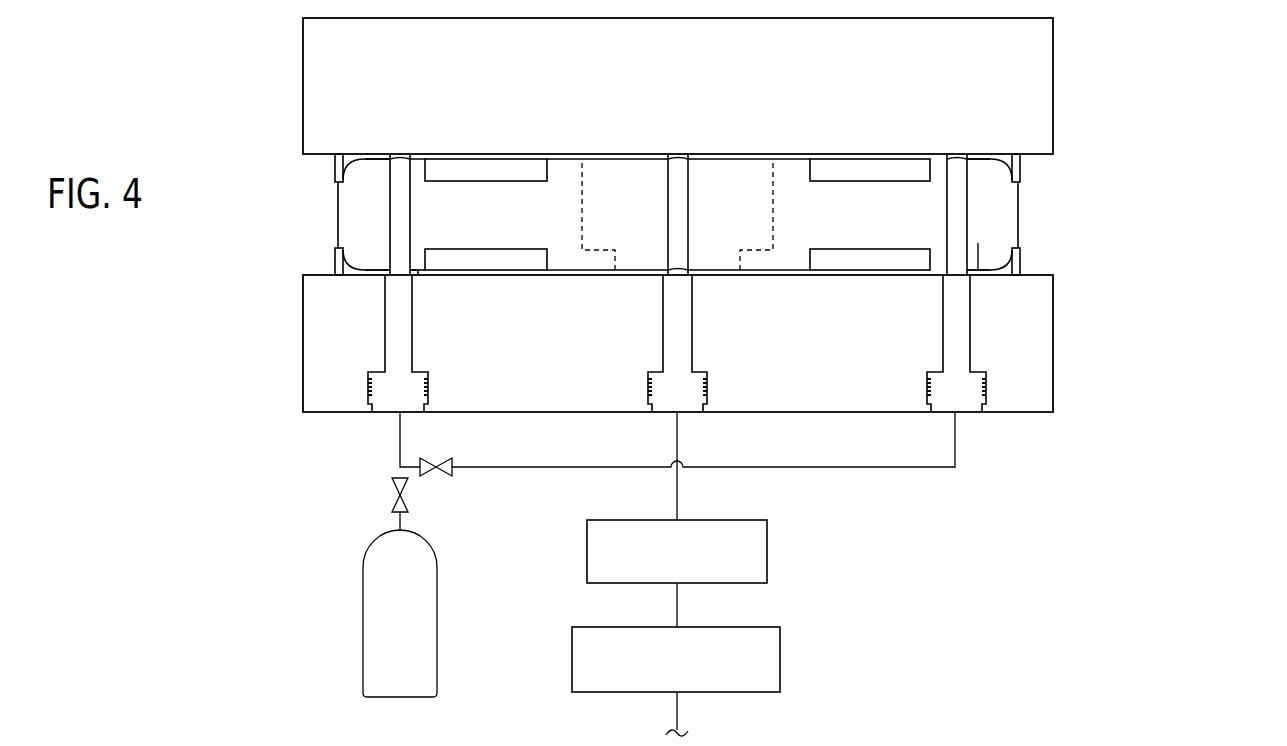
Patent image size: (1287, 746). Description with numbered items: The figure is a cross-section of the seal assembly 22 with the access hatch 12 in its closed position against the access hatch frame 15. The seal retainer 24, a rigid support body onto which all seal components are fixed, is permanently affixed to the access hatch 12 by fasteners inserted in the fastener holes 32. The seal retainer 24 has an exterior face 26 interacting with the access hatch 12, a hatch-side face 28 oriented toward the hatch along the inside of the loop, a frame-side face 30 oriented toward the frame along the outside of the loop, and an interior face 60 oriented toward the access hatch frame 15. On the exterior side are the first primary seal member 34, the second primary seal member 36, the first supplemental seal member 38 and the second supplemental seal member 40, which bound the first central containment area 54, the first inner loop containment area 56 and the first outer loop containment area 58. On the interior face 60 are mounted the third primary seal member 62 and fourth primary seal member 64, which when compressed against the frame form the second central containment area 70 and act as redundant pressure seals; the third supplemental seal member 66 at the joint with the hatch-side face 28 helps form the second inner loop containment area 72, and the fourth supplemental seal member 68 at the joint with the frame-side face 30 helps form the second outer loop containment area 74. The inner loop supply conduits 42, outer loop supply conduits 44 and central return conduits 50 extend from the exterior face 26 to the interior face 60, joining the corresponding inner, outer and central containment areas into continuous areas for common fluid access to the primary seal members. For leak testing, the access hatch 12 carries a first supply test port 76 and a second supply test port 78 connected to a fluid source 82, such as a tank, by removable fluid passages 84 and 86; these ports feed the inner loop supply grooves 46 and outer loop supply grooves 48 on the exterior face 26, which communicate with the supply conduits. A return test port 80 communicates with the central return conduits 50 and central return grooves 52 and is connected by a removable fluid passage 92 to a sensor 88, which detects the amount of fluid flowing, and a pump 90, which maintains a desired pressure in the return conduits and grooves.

The access hatch 12 is at (834, 371).
The access hatch frame 15 is at (694, 90).
The seal assembly 22 is at (1180, 133).
The seal retainer 24 is at (815, 220).
The exterior face 26 is at (517, 278).
The hatch-side face 28 is at (337, 210).
The frame-side face 30 is at (1020, 215).
The fastener holes 32 is at (735, 227).
The first primary seal member 34 is at (488, 257).
The second primary seal member 36 is at (868, 260).
The first supplemental seal member 38 is at (336, 265).
The second supplemental seal member 40 is at (1022, 266).
The inner loop supply conduits 42 is at (411, 212).
The outer loop supply conduits 44 is at (946, 216).
The inner loop supply grooves 46 is at (400, 156).
The outer loop supply grooves 48 is at (958, 156).
The central return conduits 50 is at (676, 218).
The central return grooves 52 is at (678, 155).
The first central containment area 54 is at (590, 277).
The first inner loop containment area 56 is at (417, 277).
The first outer loop containment area 58 is at (978, 245).
The interior face 60 is at (740, 153).
The third primary seal member 62 is at (523, 162).
The fourth primary seal member 64 is at (867, 170).
The third supplemental seal member 66 is at (336, 170).
The fourth supplemental seal member 68 is at (1022, 171).
The second central containment area 70 is at (615, 147).
The second inner loop containment area 72 is at (418, 158).
The second outer loop containment area 74 is at (982, 153).
The first supply test port 76 is at (413, 413).
The second supply test port 78 is at (966, 413).
The return test port 80 is at (657, 415).
The fluid source 82 is at (405, 626).
The removable fluid passage 84 is at (399, 445).
The removable fluid passage 86 is at (780, 466).
The sensor 88 is at (768, 534).
The pump 90 is at (781, 642).
The removable fluid passage 92 is at (678, 497).